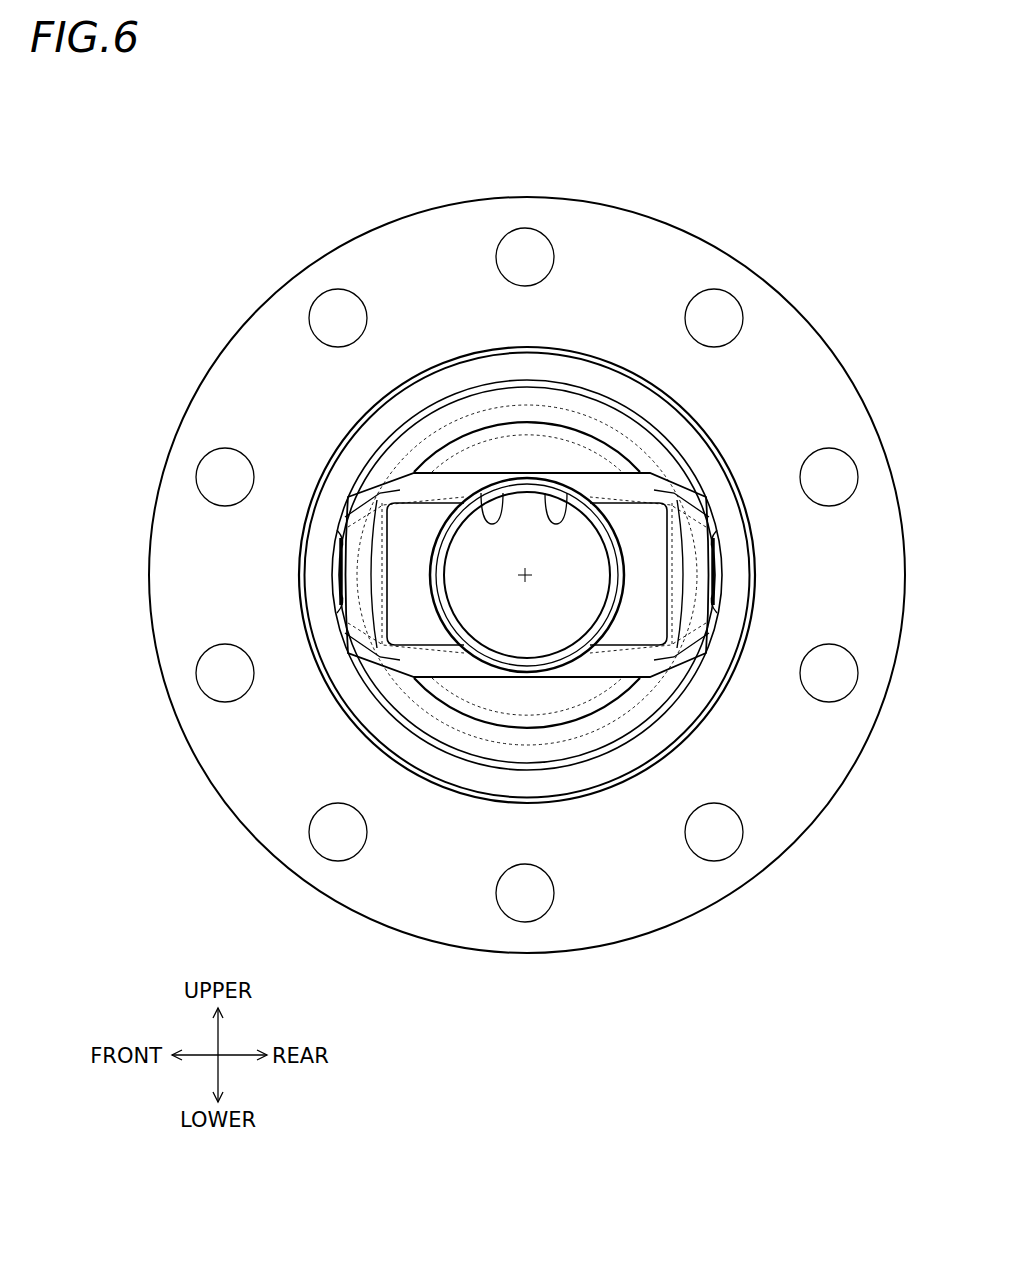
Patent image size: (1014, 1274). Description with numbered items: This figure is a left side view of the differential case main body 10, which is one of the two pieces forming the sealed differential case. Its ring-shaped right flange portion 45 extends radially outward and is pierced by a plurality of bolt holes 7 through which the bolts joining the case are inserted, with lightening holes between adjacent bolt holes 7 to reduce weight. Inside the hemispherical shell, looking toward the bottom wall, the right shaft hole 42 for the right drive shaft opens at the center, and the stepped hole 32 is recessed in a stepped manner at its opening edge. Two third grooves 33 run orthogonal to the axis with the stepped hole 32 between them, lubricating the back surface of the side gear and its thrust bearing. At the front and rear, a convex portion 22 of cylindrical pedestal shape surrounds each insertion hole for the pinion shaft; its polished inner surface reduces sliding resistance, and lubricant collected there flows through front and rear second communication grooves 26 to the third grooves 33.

The differential case main body 10 is at (262, 158).
The bolt holes 7 is at (520, 257).
The right flange portion 45 is at (773, 310).
The second communication grooves 26 is at (365, 487).
The convex portion 22 is at (337, 576).
The stepped hole 32 is at (548, 503).
The right shaft hole 42 is at (482, 507).
The third grooves 33 is at (530, 477).